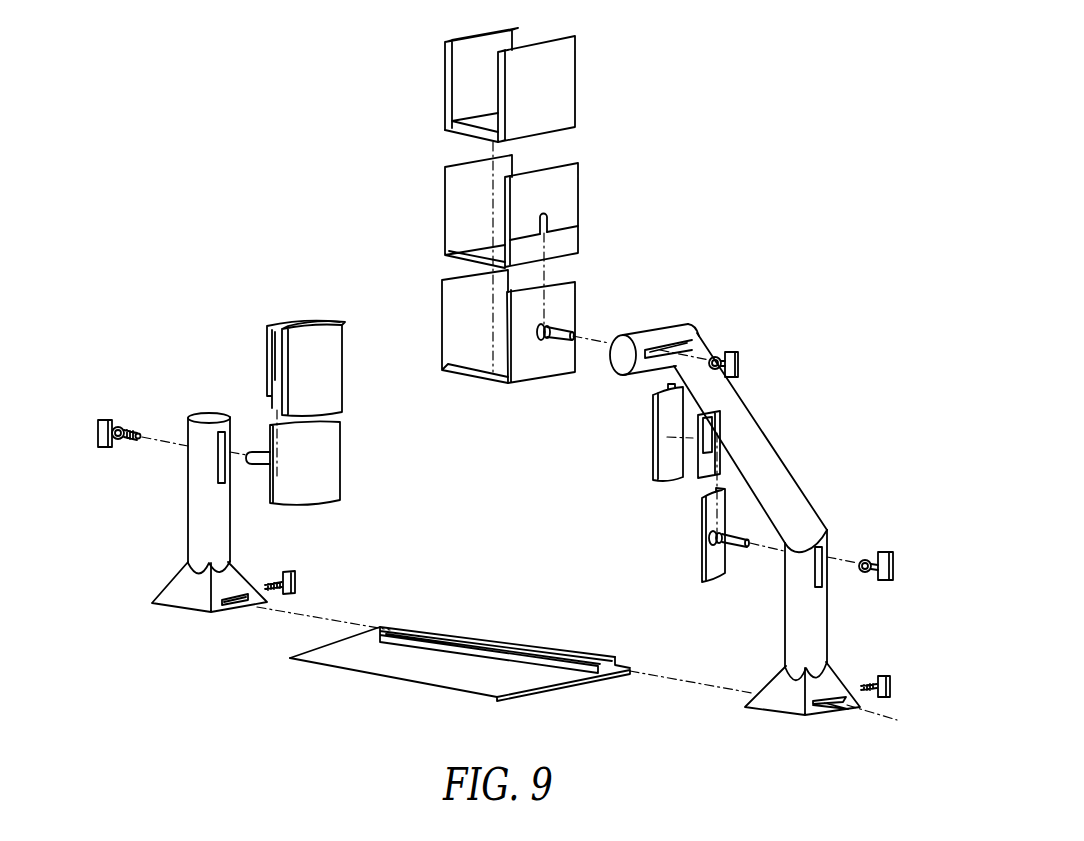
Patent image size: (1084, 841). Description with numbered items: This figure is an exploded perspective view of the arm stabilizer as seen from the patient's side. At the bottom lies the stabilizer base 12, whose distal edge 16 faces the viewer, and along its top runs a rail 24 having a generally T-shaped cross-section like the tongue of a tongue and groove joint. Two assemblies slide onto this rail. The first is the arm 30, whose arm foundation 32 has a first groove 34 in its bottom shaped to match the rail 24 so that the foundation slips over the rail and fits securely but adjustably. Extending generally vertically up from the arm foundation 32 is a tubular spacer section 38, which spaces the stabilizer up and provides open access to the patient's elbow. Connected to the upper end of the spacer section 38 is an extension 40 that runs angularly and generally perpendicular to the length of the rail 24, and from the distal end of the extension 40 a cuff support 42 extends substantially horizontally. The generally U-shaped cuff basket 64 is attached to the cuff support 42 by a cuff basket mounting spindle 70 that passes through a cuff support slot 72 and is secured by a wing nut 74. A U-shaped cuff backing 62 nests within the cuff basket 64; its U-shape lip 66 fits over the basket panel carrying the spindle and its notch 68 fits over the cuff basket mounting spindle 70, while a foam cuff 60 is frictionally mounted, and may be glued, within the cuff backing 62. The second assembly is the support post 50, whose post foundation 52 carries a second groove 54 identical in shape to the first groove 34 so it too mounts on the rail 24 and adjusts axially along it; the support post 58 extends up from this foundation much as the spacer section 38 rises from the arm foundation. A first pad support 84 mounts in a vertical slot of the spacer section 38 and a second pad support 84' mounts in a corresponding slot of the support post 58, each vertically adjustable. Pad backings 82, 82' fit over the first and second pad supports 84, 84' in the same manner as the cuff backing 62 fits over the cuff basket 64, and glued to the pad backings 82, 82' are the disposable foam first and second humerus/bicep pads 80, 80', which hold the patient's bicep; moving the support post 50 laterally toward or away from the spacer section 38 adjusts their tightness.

The stabilizer base 12 is at (333, 657).
The distal edge 16 is at (432, 685).
The rail 24 is at (400, 630).
The arm 30 is at (812, 441).
The arm foundation 32 is at (785, 703).
The first groove 34 is at (827, 710).
The spacer section 38 is at (815, 623).
The extension 40 is at (735, 415).
The cuff support 42 is at (657, 335).
The support post 50 is at (176, 517).
The post foundation 52 is at (193, 602).
The second groove 54 is at (235, 605).
The support post 58 is at (218, 523).
The foam cuff 60 is at (557, 70).
The cuff backing 62 is at (458, 193).
The cuff basket 64 is at (527, 372).
The U-shape lip 66 is at (562, 188).
The notch 68 is at (546, 214).
The cuff basket mounting spindle 70 is at (563, 332).
The cuff support slot 72 is at (651, 357).
The wing nut 74 is at (728, 352).
The first humerus/bicep pad 80 is at (643, 432).
The pad backing 82 is at (677, 468).
The first pad support 84 is at (685, 538).
The second humerus/bicep pad 80' is at (342, 368).
The pad backing 82' is at (281, 346).
The second pad support 84' is at (315, 479).